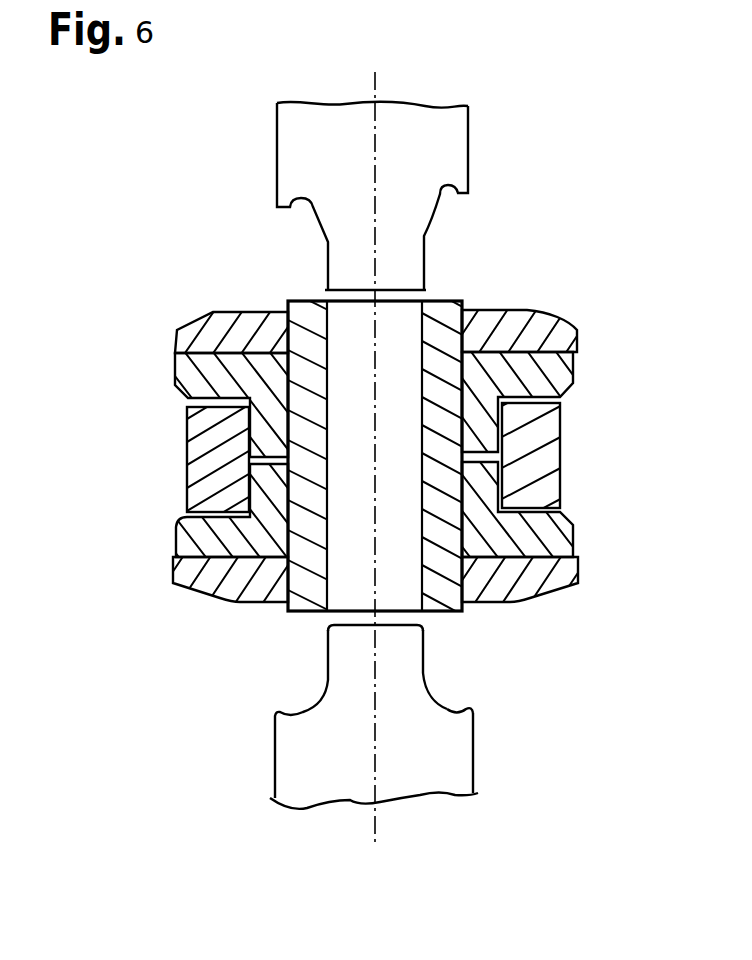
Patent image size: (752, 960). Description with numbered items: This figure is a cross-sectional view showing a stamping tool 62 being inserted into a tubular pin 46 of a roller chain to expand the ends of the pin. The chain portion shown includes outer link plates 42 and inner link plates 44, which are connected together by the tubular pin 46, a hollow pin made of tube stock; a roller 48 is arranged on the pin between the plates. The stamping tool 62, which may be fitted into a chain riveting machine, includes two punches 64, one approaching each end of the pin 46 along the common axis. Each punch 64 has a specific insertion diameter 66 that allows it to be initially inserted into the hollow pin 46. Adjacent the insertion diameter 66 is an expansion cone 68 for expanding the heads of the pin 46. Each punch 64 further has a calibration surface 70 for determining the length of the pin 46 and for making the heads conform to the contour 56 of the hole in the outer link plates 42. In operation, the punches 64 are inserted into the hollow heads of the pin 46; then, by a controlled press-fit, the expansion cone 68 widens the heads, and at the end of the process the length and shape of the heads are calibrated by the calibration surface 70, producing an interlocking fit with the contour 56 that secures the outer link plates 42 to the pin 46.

The outer link plates 42 is at (410, 336).
The inner link plates 44 is at (572, 533).
The tubular pin 46 is at (442, 573).
The roller 48 is at (232, 460).
The contour 56 is at (507, 312).
The stamping tool 62 is at (370, 491).
The punch 64 is at (404, 455).
The insertion diameter 66 is at (328, 643).
The expansion cone 68 is at (430, 683).
The calibration surface 70 is at (453, 703).